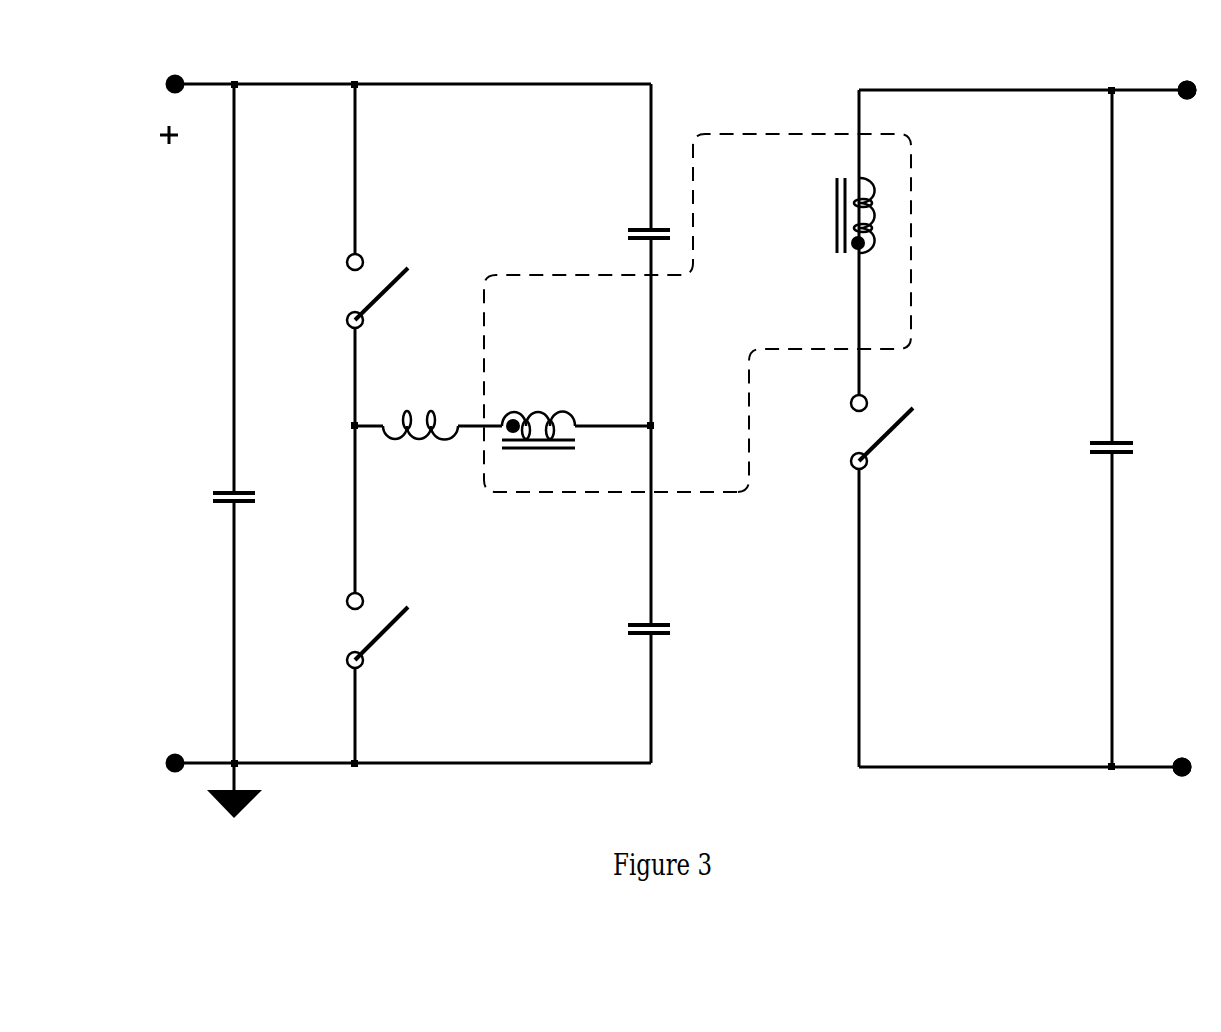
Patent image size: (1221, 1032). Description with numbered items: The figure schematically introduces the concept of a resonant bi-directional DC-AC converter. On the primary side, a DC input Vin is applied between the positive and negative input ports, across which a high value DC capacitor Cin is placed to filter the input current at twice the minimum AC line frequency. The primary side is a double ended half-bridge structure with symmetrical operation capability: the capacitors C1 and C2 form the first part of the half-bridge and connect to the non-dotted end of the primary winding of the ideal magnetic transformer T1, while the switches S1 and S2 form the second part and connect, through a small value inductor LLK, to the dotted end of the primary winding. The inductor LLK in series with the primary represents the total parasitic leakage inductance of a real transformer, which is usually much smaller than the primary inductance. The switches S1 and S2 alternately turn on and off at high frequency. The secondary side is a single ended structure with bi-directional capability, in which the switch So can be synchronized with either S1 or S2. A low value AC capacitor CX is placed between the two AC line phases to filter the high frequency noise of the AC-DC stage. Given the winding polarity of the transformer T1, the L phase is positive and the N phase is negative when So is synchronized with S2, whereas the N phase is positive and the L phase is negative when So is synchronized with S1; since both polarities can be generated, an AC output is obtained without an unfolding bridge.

The input voltage Vin is at (182, 162).
The DC capacitor Cin is at (206, 451).
The switch S1 is at (345, 255).
The switch S2 is at (343, 594).
The capacitor C1 is at (605, 255).
The capacitor C2 is at (610, 594).
The leakage inductor LLK is at (427, 449).
The magnetic transformer T1 is at (697, 340).
The switch So is at (847, 581).
The AC capacitor CX is at (1144, 428).
The L phase L is at (1170, 117).
The N phase N is at (1167, 736).